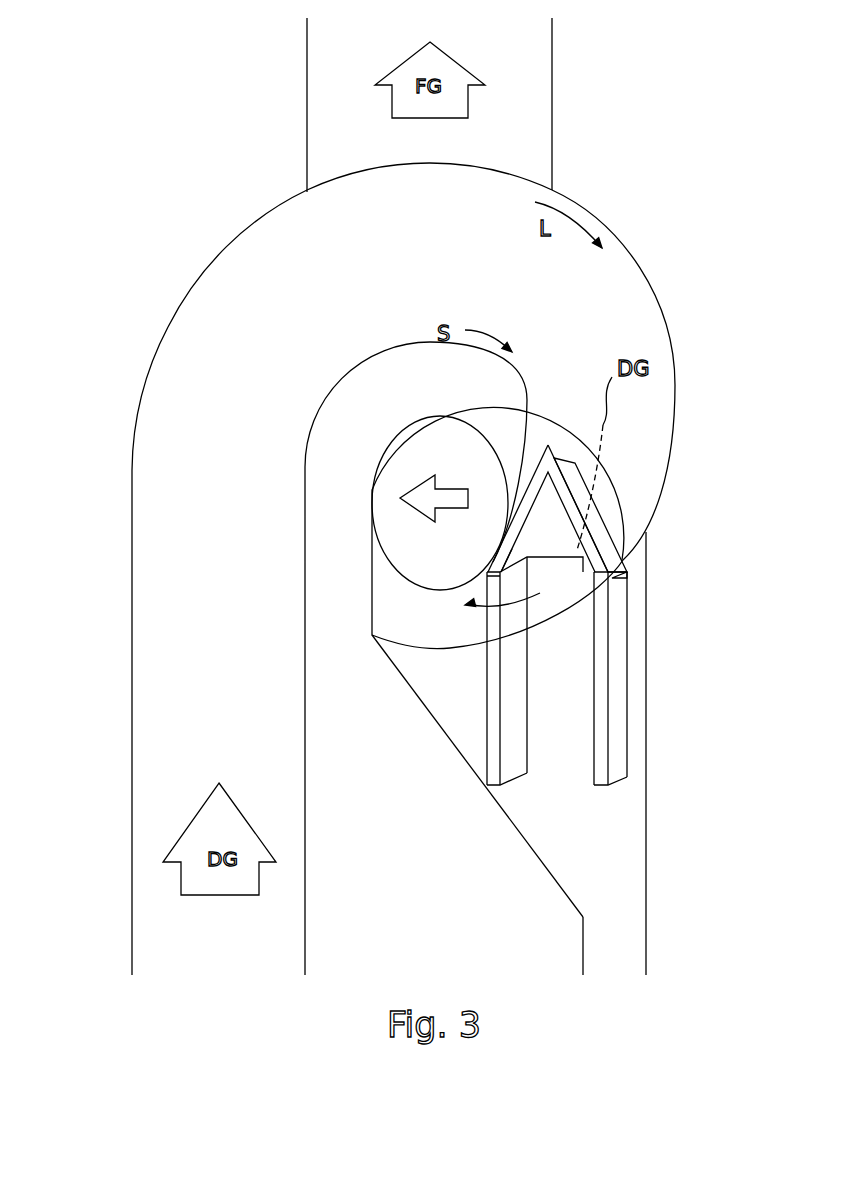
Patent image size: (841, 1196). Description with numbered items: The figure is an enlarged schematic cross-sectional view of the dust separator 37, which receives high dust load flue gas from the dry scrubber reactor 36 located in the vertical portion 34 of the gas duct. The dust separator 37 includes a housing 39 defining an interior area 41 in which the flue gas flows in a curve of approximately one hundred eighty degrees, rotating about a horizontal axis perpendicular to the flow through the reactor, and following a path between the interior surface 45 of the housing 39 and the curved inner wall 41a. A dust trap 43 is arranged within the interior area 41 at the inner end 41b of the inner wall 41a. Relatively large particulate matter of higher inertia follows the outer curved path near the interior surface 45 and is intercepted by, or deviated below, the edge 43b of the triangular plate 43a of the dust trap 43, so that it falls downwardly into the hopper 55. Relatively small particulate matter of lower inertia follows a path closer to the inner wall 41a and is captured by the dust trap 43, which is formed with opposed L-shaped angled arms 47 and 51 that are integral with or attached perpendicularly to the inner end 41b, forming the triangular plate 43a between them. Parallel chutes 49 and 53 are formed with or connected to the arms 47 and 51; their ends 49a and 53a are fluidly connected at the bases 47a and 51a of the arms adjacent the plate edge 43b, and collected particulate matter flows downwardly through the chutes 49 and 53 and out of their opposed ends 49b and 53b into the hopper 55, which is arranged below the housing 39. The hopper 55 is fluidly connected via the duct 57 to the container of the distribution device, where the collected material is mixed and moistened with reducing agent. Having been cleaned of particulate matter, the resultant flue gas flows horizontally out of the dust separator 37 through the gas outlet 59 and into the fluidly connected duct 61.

The vertical portion 34 is at (132, 708).
The dry scrubber reactor 36 is at (132, 812).
The dust separator 37 is at (184, 299).
The housing 39 is at (630, 250).
The interior area 41 is at (245, 252).
The curved inner wall 41a is at (305, 630).
The inner end 41b is at (610, 458).
The dust trap 43 is at (601, 558).
The triangular plate 43a is at (545, 548).
The edge 43b is at (580, 548).
The interior surface 45 is at (152, 380).
The L shaped angled arm 47 is at (642, 474).
The base 47a is at (620, 567).
The chute 49 is at (662, 723).
The end 49a is at (628, 573).
The opposed end 49b is at (618, 787).
The L shaped angled arm 51 is at (526, 489).
The base 51a is at (497, 563).
The chute 53 is at (507, 691).
The end 53a is at (489, 577).
The opposed end 53b is at (513, 787).
The hopper 55 is at (645, 738).
The duct 57 is at (646, 915).
The gas outlet 59 is at (458, 449).
The duct 61 is at (552, 92).